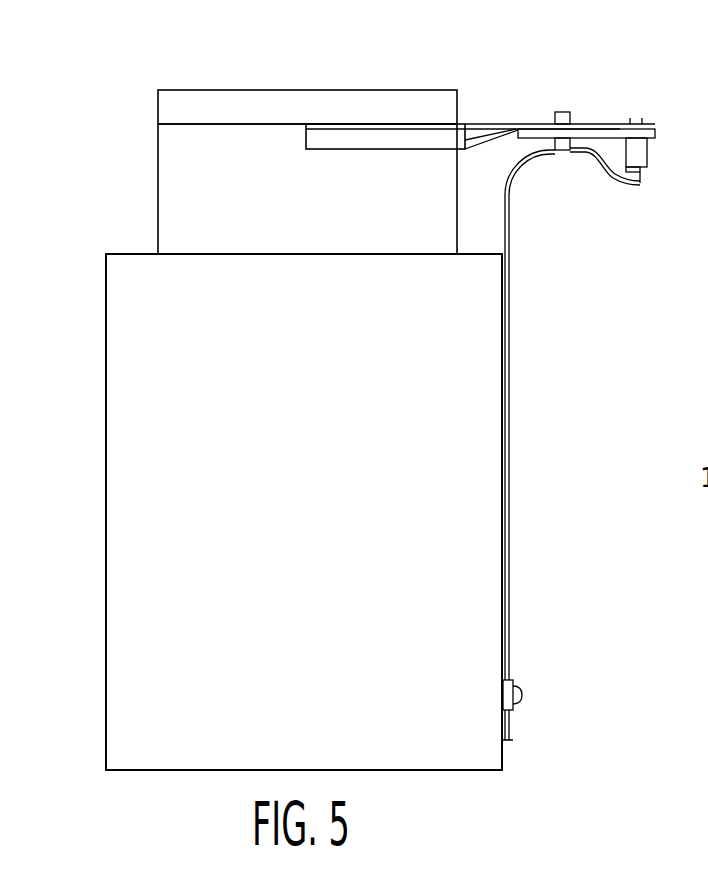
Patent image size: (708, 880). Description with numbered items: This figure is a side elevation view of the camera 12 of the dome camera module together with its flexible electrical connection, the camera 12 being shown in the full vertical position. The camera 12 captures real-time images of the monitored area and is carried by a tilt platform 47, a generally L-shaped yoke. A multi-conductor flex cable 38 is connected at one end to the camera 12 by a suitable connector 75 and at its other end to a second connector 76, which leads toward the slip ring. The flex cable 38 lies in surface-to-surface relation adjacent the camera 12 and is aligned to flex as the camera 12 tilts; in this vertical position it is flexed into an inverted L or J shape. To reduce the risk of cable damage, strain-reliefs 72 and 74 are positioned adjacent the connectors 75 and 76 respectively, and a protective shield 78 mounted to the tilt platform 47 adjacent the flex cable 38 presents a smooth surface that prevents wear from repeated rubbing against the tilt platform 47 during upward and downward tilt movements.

The camera 12 is at (125, 684).
The tilt platform 47 is at (198, 103).
The protective shield 78 is at (378, 140).
The strain-relief 74 is at (562, 112).
The second connector 76 is at (648, 153).
The multi-conductor flex cable 38 is at (511, 636).
The strain-relief 72 is at (522, 695).
The connector 75 is at (511, 740).